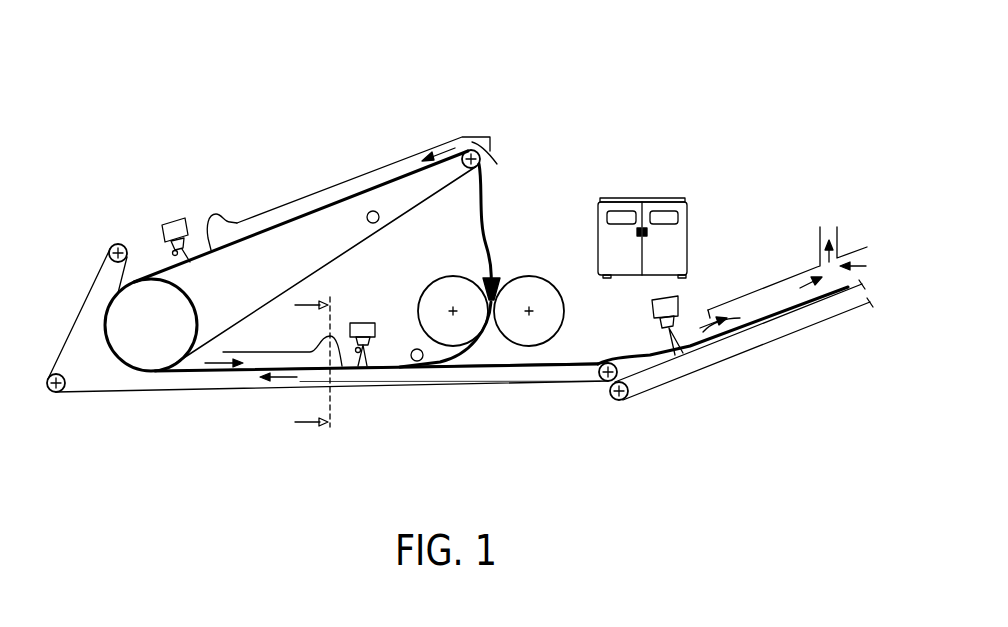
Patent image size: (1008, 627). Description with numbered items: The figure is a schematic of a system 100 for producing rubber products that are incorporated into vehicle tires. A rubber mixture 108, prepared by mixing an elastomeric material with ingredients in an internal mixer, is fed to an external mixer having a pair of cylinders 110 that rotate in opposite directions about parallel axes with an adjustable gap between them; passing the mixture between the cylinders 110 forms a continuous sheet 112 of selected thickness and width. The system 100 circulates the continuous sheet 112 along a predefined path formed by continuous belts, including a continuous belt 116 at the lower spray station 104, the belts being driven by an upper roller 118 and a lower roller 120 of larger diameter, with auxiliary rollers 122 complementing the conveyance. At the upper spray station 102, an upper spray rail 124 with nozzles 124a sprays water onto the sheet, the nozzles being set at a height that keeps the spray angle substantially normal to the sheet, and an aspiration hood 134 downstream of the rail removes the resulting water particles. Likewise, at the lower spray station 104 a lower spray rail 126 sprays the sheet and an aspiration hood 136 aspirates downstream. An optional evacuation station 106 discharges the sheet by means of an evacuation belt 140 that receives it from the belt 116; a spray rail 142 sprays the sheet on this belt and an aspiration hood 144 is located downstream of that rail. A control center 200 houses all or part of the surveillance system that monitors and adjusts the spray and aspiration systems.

The system 100 is at (240, 100).
The upper spray station 102 is at (355, 118).
The lower spray station 104 is at (376, 422).
The evacuation station 106 is at (856, 208).
The rubber mixture 108 is at (500, 272).
The cylinders 110 is at (525, 325).
The continuous sheet 112 is at (440, 366).
The continuous belt 116 is at (540, 385).
The upper roller 118 is at (481, 140).
The lower roller 120 is at (162, 342).
The auxiliary rollers 122 is at (113, 245).
The upper spray rail 124 is at (170, 220).
The nozzles 124a is at (187, 256).
The lower spray rail 126 is at (363, 318).
The aspiration hood 134 is at (322, 198).
The aspiration hood 136 is at (322, 340).
The evacuation belt 140 is at (863, 286).
The spray rail 142 is at (678, 302).
The aspiration hood 144 is at (832, 232).
The control center 200 is at (641, 198).